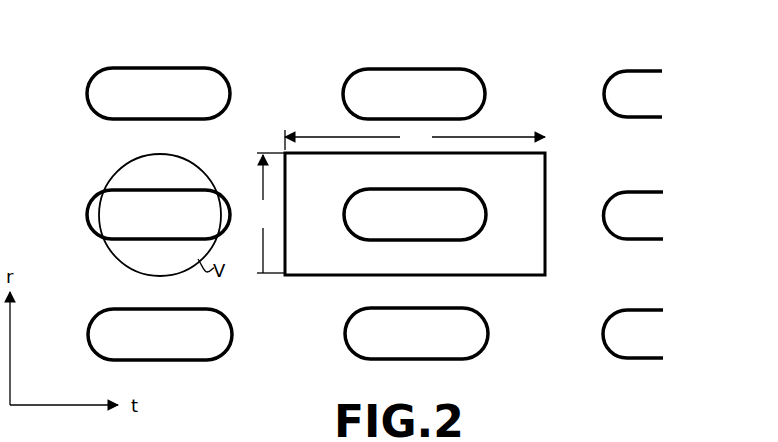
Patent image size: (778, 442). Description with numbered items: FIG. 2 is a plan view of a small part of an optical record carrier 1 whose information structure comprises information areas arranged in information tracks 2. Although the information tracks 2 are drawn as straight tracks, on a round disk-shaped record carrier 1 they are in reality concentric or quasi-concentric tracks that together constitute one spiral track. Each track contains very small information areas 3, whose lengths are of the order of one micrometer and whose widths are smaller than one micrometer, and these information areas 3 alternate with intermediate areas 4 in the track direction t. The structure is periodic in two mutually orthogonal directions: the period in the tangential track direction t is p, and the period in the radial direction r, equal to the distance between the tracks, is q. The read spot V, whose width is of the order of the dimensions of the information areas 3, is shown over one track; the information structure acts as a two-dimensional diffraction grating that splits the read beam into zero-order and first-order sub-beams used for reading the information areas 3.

The record carrier 1 is at (547, 56).
The information tracks 2 is at (677, 93).
The information areas 3 is at (177, 83).
The intermediate areas 4 is at (281, 84).